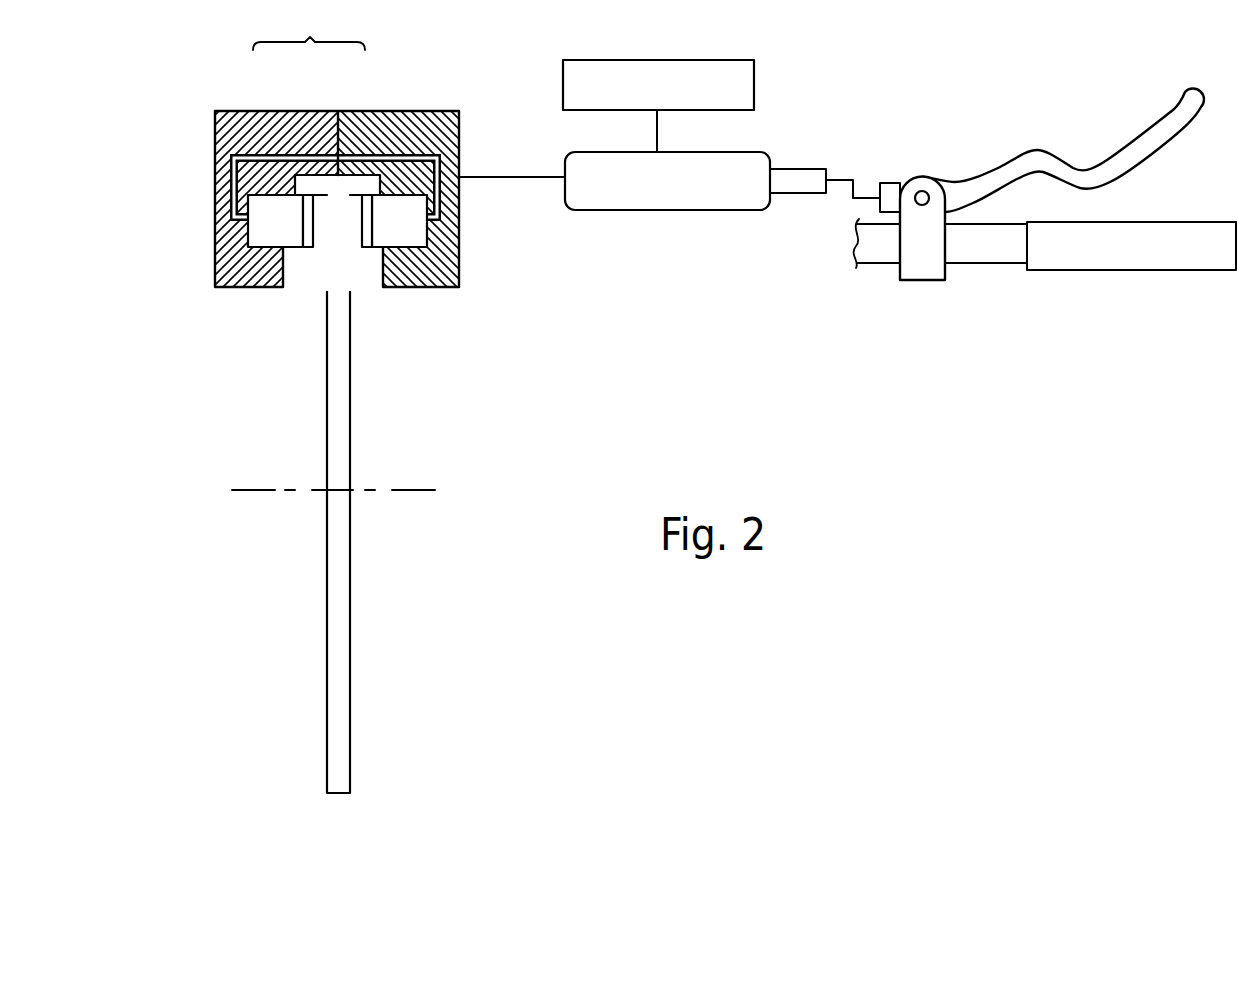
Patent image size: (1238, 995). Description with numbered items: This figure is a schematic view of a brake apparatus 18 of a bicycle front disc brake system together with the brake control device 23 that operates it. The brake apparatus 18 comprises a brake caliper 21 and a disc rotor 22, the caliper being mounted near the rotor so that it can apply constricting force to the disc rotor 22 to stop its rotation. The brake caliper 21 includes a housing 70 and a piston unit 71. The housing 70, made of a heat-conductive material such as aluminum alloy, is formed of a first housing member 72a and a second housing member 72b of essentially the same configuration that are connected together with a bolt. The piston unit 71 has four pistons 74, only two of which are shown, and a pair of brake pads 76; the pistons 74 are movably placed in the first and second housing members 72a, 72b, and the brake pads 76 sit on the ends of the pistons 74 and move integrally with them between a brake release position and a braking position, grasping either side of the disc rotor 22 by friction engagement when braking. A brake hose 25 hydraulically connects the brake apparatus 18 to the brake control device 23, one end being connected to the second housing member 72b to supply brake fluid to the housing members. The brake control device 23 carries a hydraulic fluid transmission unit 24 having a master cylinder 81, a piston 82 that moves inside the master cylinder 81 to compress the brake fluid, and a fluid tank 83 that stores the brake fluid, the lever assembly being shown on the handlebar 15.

The handlebar 15 is at (993, 268).
The brake apparatus 18 is at (408, 92).
The brake caliper 21 is at (309, 26).
The disc rotor 22 is at (349, 454).
The brake control device 23 is at (1021, 133).
The hydraulic fluid transmission unit 24 is at (787, 151).
The brake hose 25 is at (525, 177).
The housing 70 is at (352, 128).
The piston unit 71 is at (282, 208).
The first housing member 72a is at (218, 182).
The second housing member 72b is at (459, 128).
The pistons 74 is at (262, 244).
The brake pads 76 is at (310, 244).
The master cylinder 81 is at (716, 210).
The piston 82 is at (800, 193).
The fluid tank 83 is at (732, 60).